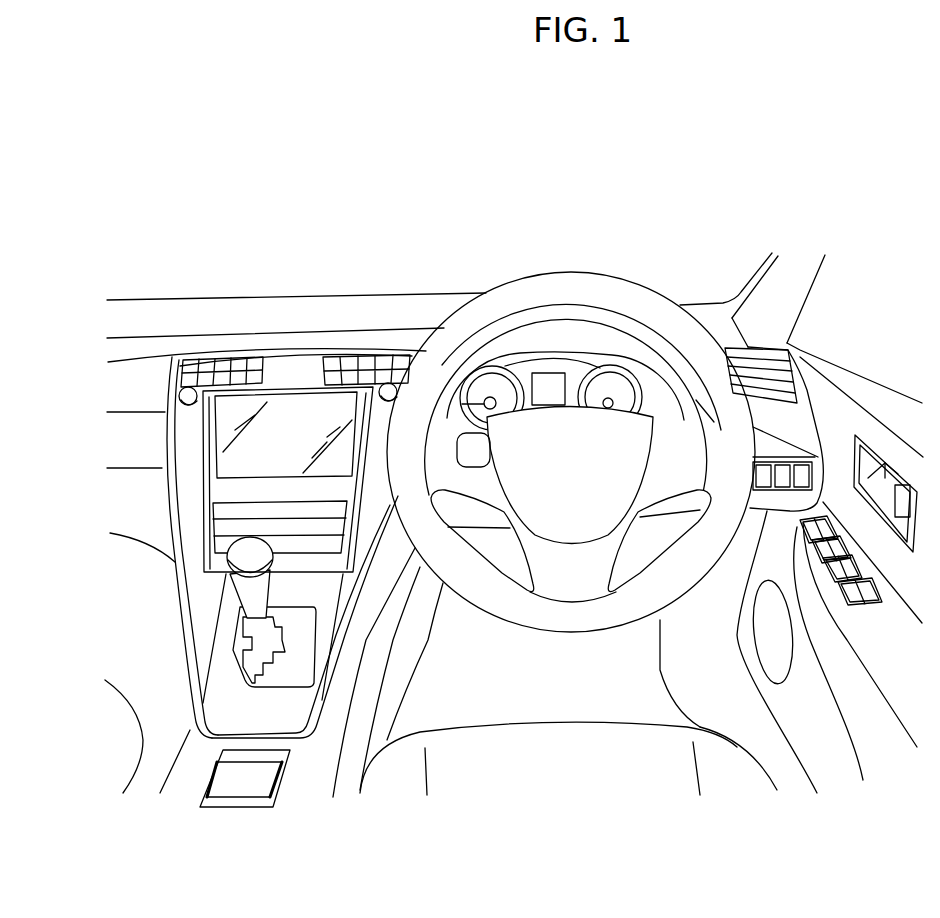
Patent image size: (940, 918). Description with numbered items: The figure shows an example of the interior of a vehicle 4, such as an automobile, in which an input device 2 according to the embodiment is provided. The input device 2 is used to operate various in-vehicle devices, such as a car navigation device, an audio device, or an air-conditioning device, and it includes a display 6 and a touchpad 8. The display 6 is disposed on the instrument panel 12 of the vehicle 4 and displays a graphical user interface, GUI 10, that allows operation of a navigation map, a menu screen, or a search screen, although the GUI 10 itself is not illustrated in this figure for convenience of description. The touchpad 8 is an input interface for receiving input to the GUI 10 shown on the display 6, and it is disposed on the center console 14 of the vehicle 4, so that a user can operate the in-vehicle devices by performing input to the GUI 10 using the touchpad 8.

The input device 2 is at (190, 508).
The vehicle 4 is at (778, 198).
The display 6 is at (308, 402).
The touchpad 8 is at (243, 787).
The graphical user interface (GUI) 10 is at (273, 412).
The instrument panel 12 is at (185, 445).
The center console 14 is at (190, 775).